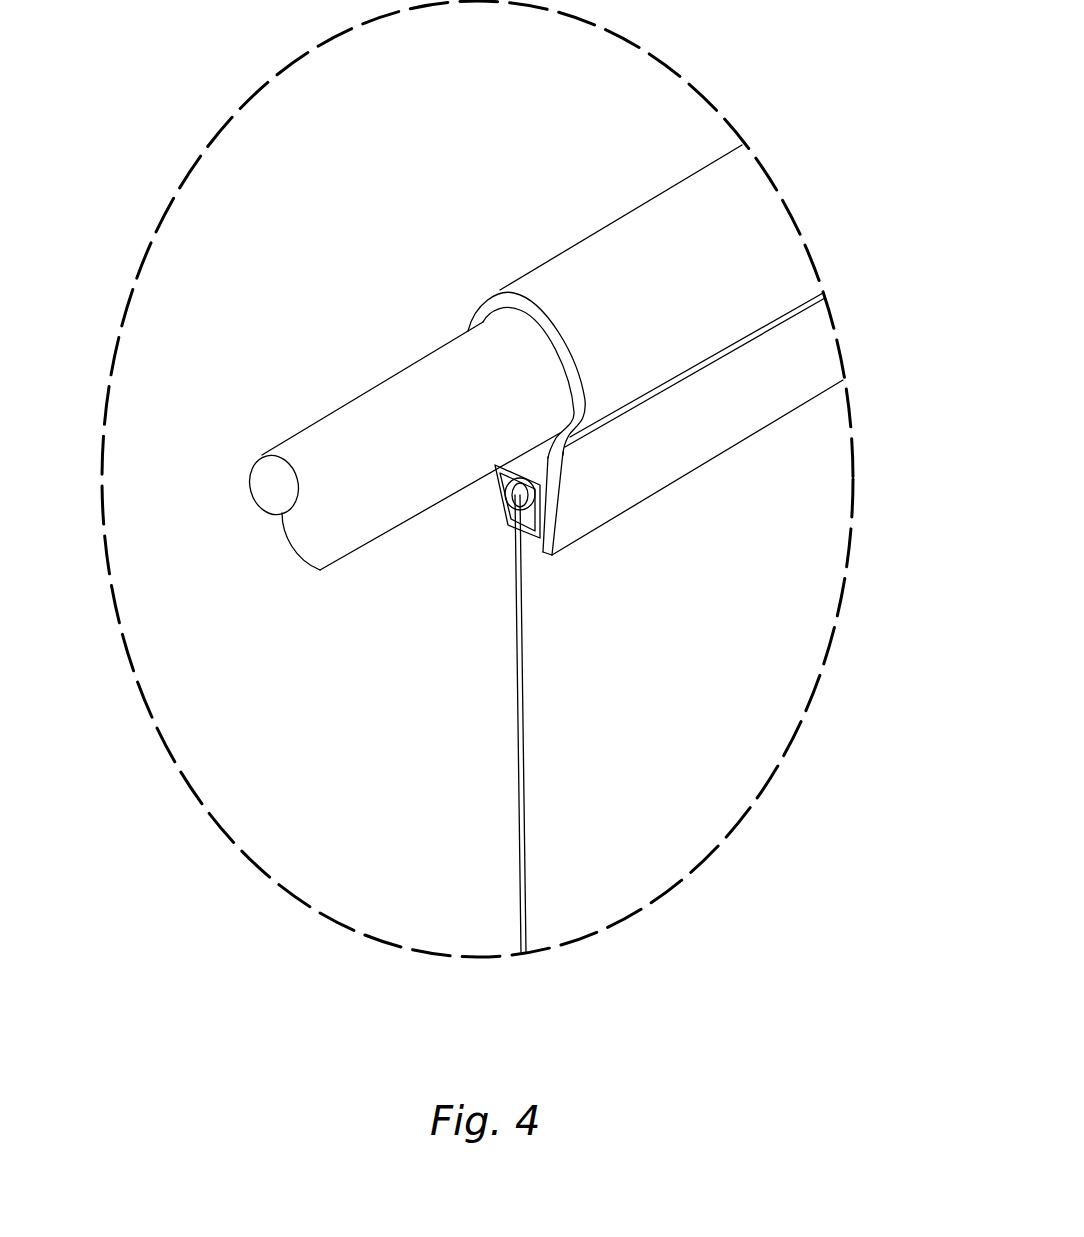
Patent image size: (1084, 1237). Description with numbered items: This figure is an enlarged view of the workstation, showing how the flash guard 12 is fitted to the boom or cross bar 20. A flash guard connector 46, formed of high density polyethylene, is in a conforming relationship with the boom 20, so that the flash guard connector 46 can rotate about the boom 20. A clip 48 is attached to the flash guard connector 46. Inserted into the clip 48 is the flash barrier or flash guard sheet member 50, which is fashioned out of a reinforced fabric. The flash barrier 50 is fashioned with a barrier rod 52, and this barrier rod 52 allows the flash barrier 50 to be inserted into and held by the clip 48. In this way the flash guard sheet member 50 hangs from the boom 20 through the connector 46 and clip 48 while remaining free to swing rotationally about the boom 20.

The flash guard 12 is at (613, 218).
The boom or cross bar 20 is at (382, 397).
The flash guard connector 46 is at (755, 195).
The clip 48 is at (535, 458).
The flash guard sheet member 50 is at (823, 555).
The barrier rod 52 is at (516, 493).